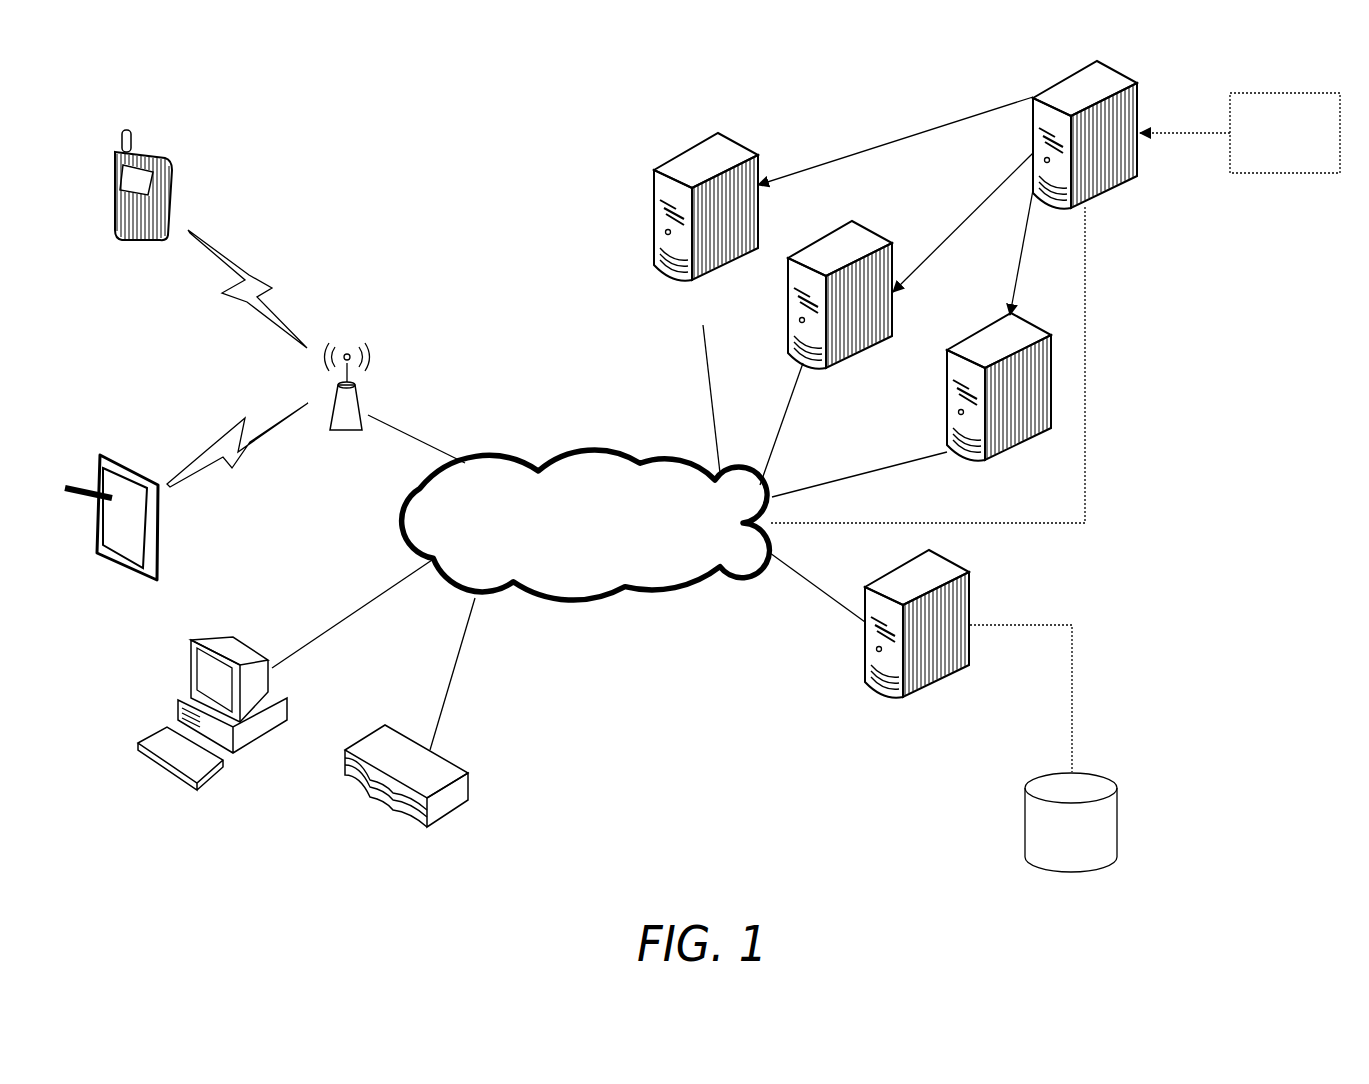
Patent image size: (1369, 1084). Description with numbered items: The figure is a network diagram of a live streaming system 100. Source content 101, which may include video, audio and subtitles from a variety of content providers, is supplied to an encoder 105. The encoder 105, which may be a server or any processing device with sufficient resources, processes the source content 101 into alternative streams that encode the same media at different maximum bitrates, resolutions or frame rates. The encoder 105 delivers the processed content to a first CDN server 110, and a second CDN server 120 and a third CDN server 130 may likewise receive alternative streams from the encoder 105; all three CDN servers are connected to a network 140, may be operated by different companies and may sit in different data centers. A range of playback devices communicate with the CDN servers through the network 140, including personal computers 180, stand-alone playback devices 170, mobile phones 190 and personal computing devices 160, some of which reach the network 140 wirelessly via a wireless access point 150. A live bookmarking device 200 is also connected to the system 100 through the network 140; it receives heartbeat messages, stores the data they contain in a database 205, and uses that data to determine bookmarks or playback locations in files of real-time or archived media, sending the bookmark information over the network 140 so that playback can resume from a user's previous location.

The live streaming system 100 is at (520, 168).
The content 101 is at (1283, 177).
The encoder 105 is at (1137, 95).
The first CDN server 110 is at (737, 143).
The second CDN server 120 is at (878, 235).
The third CDN server 130 is at (947, 403).
The network 140 is at (633, 458).
The wireless access point 150 is at (350, 383).
The personal computing device 160 is at (153, 527).
The stand-alone playback device 170 is at (372, 807).
The personal computer 180 is at (173, 773).
The mobile phone 190 is at (160, 158).
The live bookmarking device 200 is at (865, 665).
The database 205 is at (1118, 818).